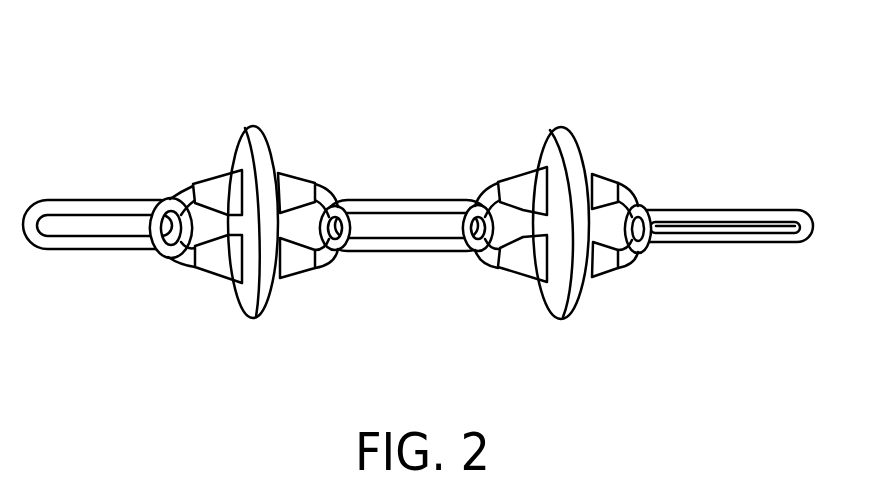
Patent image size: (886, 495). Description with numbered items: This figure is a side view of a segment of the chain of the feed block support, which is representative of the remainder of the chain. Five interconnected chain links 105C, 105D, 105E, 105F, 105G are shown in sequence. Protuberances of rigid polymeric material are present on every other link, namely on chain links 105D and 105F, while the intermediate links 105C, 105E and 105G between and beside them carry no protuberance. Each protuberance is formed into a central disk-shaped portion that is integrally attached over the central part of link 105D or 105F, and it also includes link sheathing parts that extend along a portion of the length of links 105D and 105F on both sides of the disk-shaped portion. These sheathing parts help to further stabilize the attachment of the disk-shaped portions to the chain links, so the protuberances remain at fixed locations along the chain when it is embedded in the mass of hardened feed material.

The chain link 105C is at (105, 200).
The chain link 105D is at (175, 262).
The chain link 105E is at (407, 202).
The chain link 105F is at (637, 260).
The chain link 105G is at (753, 213).